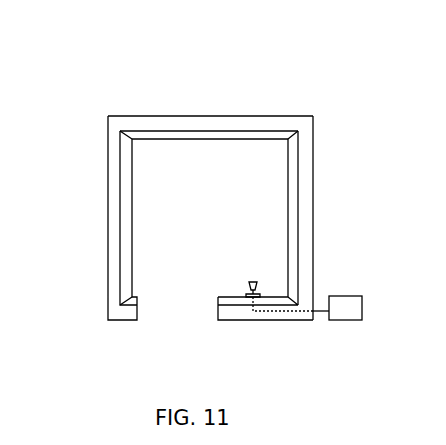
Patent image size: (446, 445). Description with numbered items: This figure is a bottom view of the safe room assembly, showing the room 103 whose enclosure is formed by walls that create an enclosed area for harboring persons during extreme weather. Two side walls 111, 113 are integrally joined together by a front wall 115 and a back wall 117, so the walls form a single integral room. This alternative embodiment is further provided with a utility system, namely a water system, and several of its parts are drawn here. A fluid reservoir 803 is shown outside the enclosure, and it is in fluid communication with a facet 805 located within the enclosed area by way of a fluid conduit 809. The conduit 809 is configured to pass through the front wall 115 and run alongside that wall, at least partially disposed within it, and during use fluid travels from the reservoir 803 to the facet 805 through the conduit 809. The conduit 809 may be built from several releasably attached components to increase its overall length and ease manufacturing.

The room 103 is at (96, 50).
The side wall 111 is at (82, 207).
The side wall 113 is at (333, 226).
The front wall 115 is at (297, 338).
The back wall 117 is at (229, 90).
The fluid reservoir 803 is at (345, 296).
The facet 805 is at (243, 283).
The fluid conduit 809 is at (270, 315).